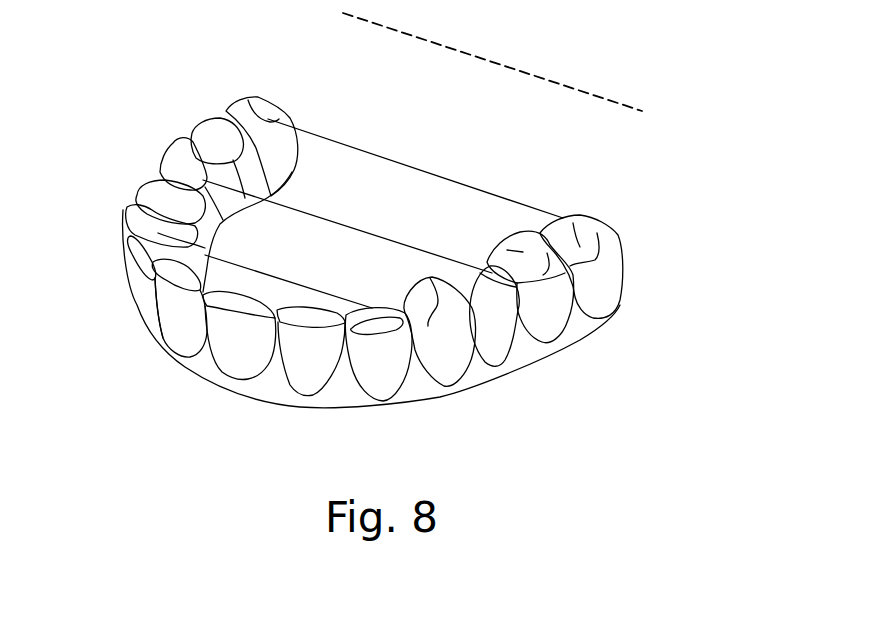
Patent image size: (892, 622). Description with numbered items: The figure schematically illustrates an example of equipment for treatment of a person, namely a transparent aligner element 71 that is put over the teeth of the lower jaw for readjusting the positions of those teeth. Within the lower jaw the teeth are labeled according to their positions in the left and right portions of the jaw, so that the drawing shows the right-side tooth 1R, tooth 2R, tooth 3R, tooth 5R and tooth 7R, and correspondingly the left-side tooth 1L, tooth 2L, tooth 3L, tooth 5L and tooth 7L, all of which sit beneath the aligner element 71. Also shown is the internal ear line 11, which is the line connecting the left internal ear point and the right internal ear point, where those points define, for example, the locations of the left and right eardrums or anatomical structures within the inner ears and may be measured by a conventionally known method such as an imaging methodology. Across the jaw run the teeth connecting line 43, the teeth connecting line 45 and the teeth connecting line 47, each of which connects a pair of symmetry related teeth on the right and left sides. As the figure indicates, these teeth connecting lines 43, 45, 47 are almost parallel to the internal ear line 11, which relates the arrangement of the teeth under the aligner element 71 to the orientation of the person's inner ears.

The internal ear line 11 is at (495, 63).
The aligner element 71 is at (668, 200).
The teeth connecting line 47 is at (413, 165).
The teeth connecting line 45 is at (360, 230).
The teeth connecting line 43 is at (300, 282).
The tooth 7R is at (238, 112).
The tooth 5R is at (172, 162).
The tooth 3R is at (132, 229).
The tooth 2R is at (137, 290).
The tooth 1R is at (173, 327).
The tooth 1L is at (228, 352).
The tooth 2L is at (303, 365).
The tooth 3L is at (370, 373).
The tooth 5L is at (493, 343).
The tooth 7L is at (616, 262).